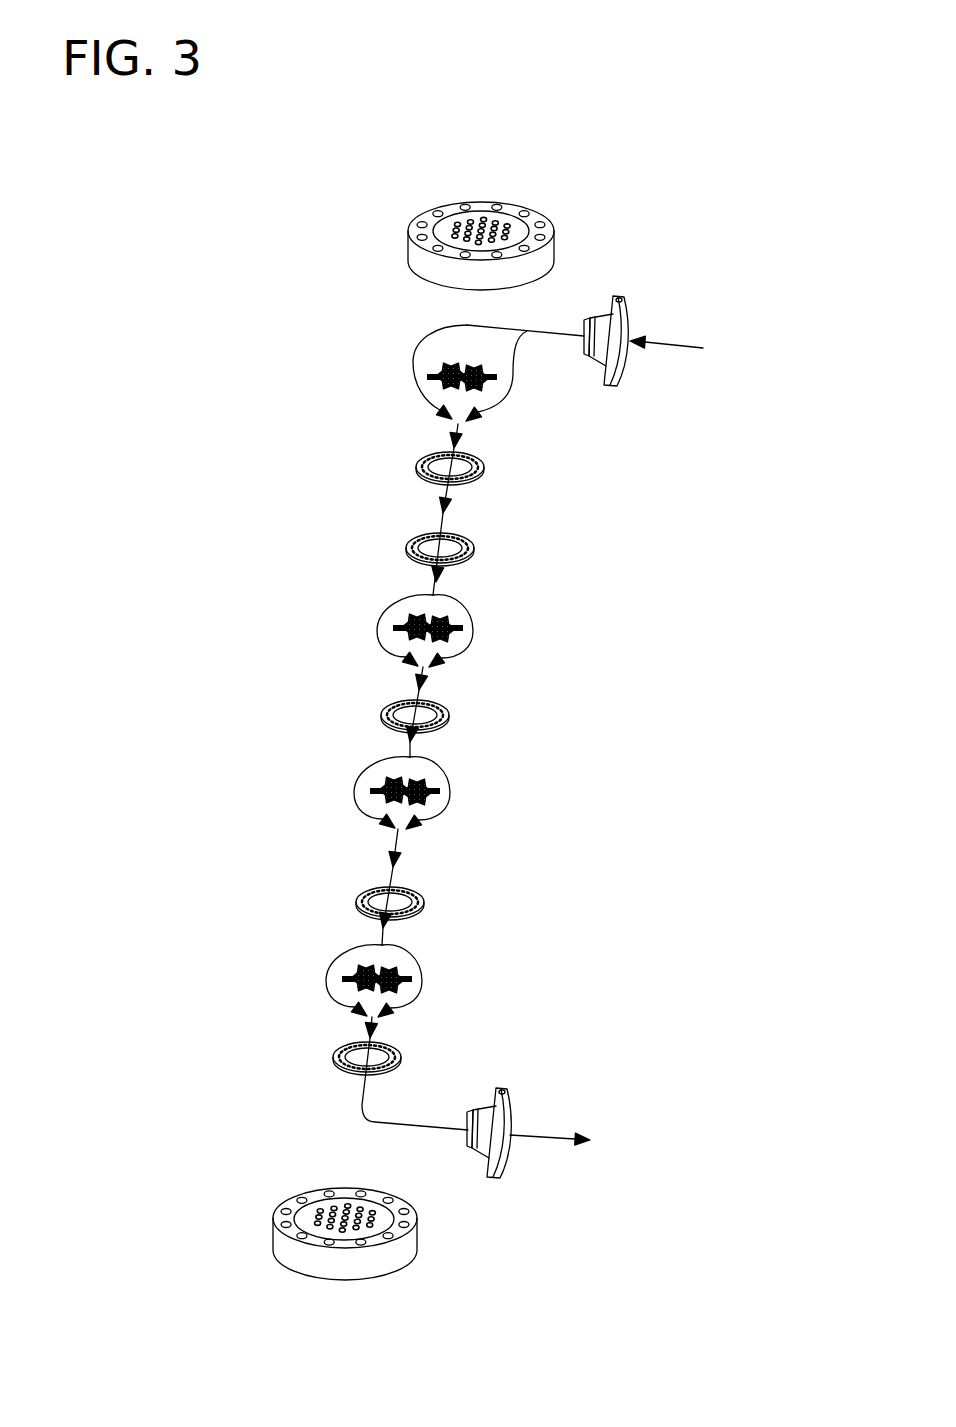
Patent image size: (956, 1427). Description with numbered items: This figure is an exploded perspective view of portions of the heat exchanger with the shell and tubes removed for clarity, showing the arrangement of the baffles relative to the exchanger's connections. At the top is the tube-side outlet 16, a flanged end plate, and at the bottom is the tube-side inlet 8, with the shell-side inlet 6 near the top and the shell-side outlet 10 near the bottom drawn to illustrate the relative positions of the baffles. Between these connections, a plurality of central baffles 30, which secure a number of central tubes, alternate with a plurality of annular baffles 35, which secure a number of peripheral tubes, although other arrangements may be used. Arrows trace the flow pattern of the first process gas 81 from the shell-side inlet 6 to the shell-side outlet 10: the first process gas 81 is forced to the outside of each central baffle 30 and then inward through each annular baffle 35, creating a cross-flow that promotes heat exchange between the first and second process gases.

The tube-side outlet 16 is at (527, 214).
The shell-side inlet 6 is at (620, 293).
The first process gas 81 is at (680, 346).
The central baffle 30 is at (498, 380).
The annular baffle 35 is at (482, 463).
The shell-side outlet 10 is at (507, 1100).
The tube-side inlet 8 is at (315, 1262).